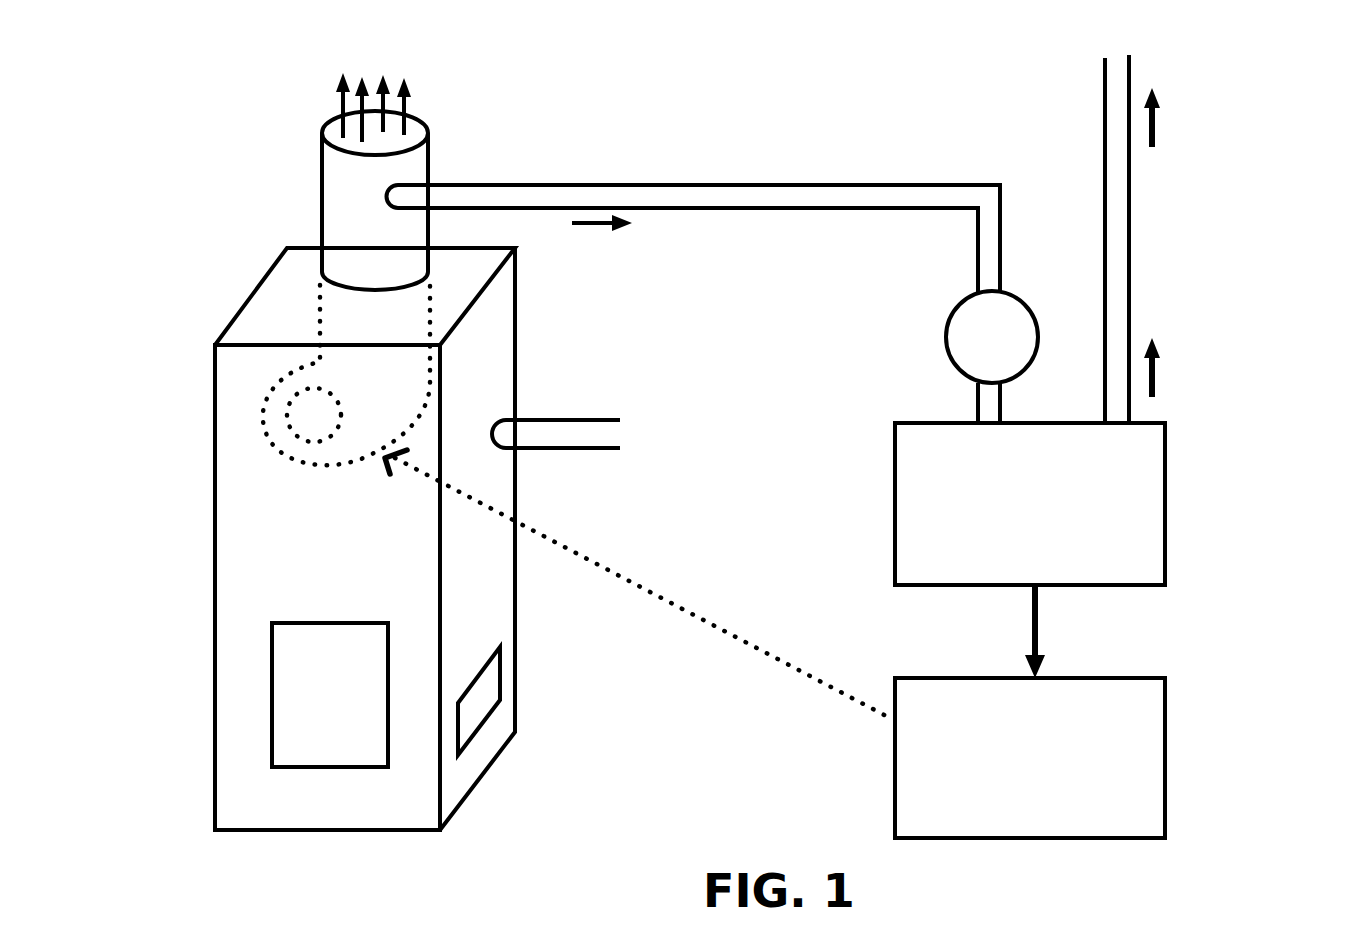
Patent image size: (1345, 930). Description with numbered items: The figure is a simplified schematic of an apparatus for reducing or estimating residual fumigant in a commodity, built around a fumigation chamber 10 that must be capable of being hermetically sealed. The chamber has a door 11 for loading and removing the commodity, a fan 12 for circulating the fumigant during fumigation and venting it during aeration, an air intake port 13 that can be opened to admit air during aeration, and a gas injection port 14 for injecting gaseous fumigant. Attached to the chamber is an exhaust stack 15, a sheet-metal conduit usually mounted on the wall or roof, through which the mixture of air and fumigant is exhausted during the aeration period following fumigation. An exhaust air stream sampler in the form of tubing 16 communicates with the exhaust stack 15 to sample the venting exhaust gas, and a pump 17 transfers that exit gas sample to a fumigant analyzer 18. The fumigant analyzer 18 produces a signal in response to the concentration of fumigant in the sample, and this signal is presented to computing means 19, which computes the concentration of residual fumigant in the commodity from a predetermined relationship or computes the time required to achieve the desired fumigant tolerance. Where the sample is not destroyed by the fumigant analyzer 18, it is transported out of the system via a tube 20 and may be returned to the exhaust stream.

The fumigation chamber 10 is at (214, 578).
The door 11 is at (352, 757).
The fan 12 is at (282, 383).
The air intake port 13 is at (490, 683).
The gas injection port 14 is at (563, 413).
The exhaust stack 15 is at (430, 155).
The exhaust air stream sampler (tubing) 16 is at (642, 180).
The pump 17 is at (958, 346).
The fumigant analyzer 18 is at (1165, 508).
The computing means 19 is at (1165, 760).
The tube 20 is at (1103, 122).